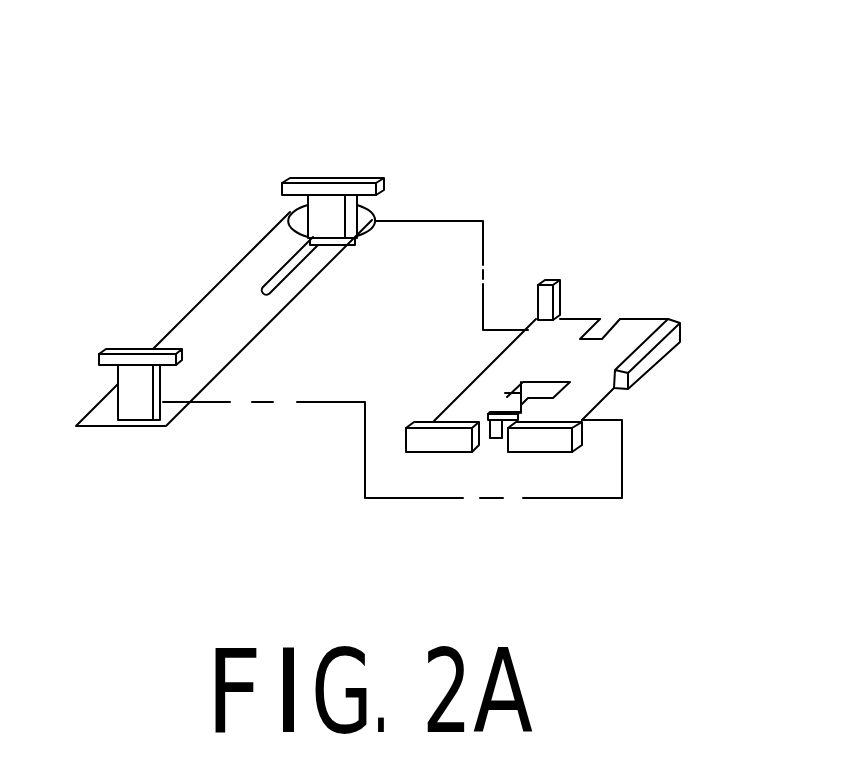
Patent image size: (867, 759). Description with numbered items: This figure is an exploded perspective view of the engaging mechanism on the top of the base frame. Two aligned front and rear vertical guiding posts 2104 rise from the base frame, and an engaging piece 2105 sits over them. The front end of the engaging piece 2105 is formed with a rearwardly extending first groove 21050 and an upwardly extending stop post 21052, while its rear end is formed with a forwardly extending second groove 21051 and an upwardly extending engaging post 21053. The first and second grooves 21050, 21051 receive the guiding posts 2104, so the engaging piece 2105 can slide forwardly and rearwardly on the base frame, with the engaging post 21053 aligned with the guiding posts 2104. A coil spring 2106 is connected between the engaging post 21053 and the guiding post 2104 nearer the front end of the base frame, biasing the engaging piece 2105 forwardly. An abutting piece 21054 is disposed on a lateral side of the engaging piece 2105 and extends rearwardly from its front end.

The guiding posts 2104 is at (300, 178).
The engaging piece 2105 is at (203, 311).
The coil spring 2106 is at (262, 293).
The first groove 21050 is at (620, 320).
The second groove 21051 is at (490, 442).
The stop post 21052 is at (550, 278).
The engaging post 21053 is at (500, 422).
The abutting piece 21054 is at (655, 365).